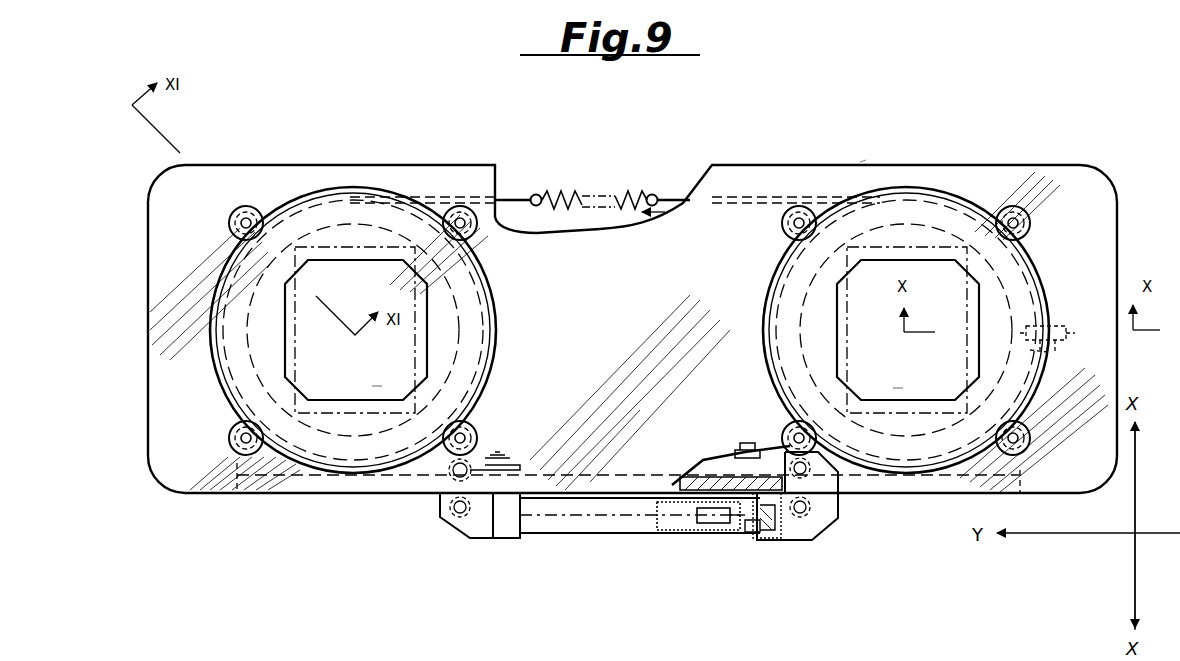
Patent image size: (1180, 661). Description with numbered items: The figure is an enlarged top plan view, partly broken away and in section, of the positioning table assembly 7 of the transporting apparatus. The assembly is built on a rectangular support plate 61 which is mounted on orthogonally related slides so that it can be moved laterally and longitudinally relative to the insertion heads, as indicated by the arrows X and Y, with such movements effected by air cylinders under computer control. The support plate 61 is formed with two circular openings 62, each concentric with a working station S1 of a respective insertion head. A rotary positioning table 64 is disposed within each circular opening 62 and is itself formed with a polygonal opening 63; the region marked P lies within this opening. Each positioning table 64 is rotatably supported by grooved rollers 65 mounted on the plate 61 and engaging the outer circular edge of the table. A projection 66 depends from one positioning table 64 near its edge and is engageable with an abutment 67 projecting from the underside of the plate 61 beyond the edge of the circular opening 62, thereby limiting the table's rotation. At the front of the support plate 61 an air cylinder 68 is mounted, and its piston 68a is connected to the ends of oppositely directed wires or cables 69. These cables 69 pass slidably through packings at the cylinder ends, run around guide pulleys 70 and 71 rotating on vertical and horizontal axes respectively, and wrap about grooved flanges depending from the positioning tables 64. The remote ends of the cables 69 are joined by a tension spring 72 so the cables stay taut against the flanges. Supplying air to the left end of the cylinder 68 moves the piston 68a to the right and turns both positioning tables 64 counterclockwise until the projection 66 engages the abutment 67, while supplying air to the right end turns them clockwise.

The positioning table assembly 7 is at (864, 162).
The support plate 61 is at (803, 183).
The circular opening 62 is at (357, 187).
The polygonal opening 63 is at (427, 330).
The rotary positioning table 64 is at (240, 470).
The grooved rollers 65 is at (230, 226).
The projection 66 is at (1040, 345).
The abutment 67 is at (1060, 346).
The air cylinder 68 is at (592, 530).
The piston 68a is at (716, 532).
The wires or cables 69 is at (517, 195).
The guide pulleys 70 is at (828, 508).
The guide pulleys 71 is at (520, 463).
The tension spring 72 is at (606, 192).
The photographic plate P is at (297, 392).
The working station S1 is at (377, 386).